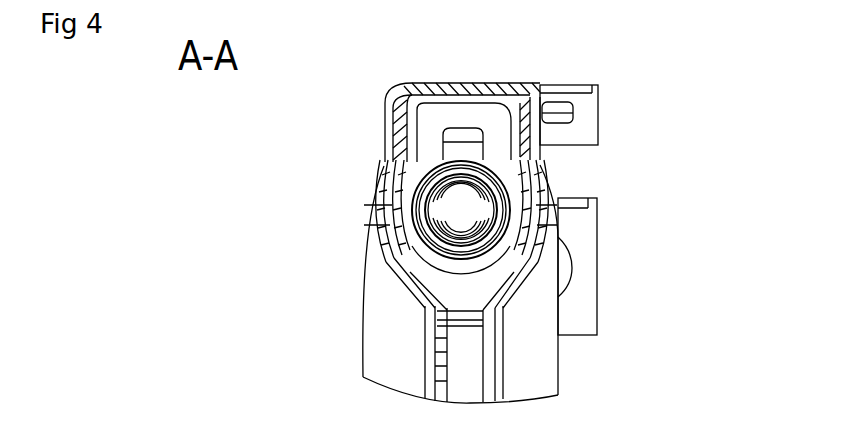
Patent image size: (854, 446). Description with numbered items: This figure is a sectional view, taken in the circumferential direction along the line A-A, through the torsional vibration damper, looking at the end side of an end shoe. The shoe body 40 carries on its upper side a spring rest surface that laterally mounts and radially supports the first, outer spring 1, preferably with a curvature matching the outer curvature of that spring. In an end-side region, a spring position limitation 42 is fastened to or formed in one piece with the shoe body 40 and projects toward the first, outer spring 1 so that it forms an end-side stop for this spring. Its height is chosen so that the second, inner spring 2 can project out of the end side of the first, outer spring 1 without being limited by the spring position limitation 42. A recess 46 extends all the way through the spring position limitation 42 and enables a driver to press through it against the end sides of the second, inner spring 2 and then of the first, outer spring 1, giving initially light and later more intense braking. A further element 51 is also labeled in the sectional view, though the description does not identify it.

The first, outer spring 1 is at (450, 300).
The second, inner spring 2 is at (393, 247).
The shoe body 40 is at (500, 145).
The spring position limitation 42 is at (417, 123).
The recess 46 is at (385, 163).
The recess 51 is at (414, 102).